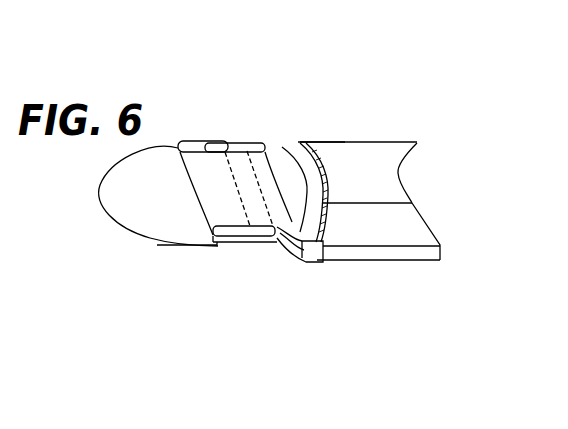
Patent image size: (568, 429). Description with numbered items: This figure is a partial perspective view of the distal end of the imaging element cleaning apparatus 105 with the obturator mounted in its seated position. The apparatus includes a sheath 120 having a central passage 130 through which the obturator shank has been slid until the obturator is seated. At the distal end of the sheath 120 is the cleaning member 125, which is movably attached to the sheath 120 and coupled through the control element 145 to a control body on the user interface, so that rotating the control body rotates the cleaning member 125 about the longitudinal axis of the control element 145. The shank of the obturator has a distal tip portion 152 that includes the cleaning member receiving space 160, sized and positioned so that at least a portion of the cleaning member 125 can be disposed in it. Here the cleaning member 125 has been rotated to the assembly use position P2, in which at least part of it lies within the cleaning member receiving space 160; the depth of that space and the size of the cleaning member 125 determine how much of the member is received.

The imaging element cleaning apparatus 105 is at (337, 141).
The sheath 120 is at (372, 148).
The cleaning member 125 is at (223, 148).
The central passage 130 is at (295, 148).
The control element 145 is at (293, 248).
The distal tip portion 152 is at (120, 207).
The cleaning member receiving space 160 is at (242, 245).
The assembly use position P2 is at (190, 213).